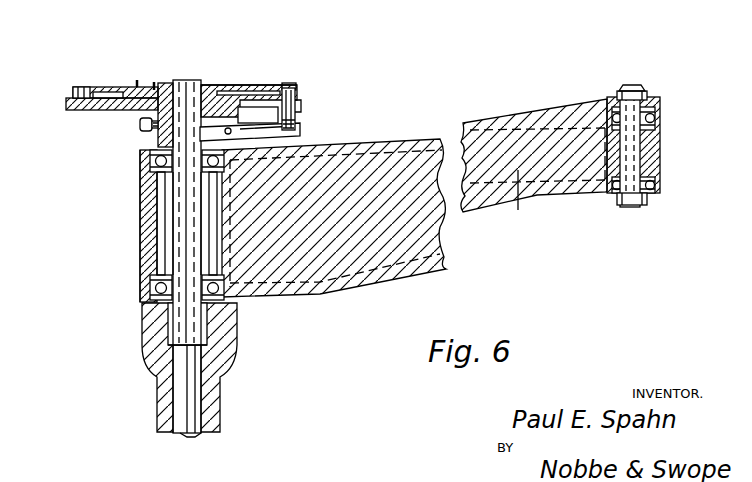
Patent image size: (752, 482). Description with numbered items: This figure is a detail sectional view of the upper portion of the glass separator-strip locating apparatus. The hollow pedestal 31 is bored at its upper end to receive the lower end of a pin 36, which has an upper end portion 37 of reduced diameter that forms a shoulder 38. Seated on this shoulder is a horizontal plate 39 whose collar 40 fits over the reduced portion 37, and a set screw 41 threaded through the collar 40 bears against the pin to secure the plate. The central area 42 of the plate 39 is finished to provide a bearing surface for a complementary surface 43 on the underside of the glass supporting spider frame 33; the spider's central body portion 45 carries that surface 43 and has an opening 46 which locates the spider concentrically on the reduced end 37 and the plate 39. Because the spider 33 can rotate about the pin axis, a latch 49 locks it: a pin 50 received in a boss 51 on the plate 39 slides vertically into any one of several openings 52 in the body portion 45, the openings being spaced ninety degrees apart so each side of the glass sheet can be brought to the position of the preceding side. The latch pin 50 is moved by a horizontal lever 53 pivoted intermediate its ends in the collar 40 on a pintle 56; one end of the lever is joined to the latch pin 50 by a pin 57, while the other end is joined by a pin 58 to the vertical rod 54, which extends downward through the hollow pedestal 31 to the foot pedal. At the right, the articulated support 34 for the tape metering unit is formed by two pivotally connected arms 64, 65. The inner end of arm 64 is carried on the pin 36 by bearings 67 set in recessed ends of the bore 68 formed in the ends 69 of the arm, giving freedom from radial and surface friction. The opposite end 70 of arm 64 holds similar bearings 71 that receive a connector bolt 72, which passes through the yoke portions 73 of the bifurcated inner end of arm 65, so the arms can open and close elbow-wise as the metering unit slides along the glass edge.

The pedestal 31 is at (223, 389).
The glass supporting spider frame 33 is at (110, 88).
The articulated support 34 is at (495, 121).
The pin 36 is at (171, 240).
The upper end portion of reduced diameter 37 is at (190, 84).
The shoulder 38 is at (145, 180).
The horizontal plate 39 is at (106, 109).
The collar 40 is at (160, 142).
The set screw 41 is at (140, 126).
The central area of the plate 42 is at (154, 90).
The complementary surface 43 is at (137, 88).
The central body portion 45 is at (239, 84).
The opening 46 is at (216, 88).
The latch 49 is at (340, 110).
The pin 50 is at (299, 95).
The boss 51 is at (302, 107).
The openings 52 is at (80, 86).
The horizontal lever 53 is at (285, 132).
The vertical rod 54 is at (188, 369).
The pintle 56 is at (258, 115).
The pin 57 is at (296, 125).
The pin 58 is at (139, 153).
The arm 64 is at (518, 202).
The arm 65 is at (622, 96).
The bearings 67 is at (157, 193).
The bore 68 is at (156, 275).
The ends of arm 69 is at (143, 224).
The opposite end of arm 70 is at (660, 160).
The bearings 71 is at (657, 113).
The connector bolt 72 is at (632, 150).
The yoke portions 73 is at (650, 94).